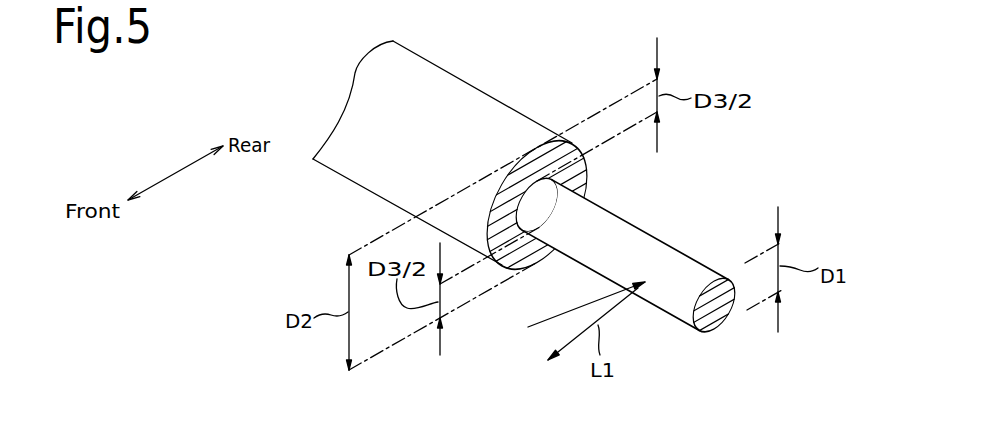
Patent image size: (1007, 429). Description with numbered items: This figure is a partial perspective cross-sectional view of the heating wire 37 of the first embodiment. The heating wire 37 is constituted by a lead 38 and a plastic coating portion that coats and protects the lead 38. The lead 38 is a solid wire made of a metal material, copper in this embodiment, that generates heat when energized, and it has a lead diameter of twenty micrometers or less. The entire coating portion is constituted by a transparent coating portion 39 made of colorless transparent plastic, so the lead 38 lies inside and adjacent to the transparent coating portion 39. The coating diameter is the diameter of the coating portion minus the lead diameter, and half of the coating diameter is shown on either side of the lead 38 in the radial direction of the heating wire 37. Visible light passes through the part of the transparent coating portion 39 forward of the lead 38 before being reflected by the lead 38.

The heating wire 37 is at (548, 235).
The lead 38 is at (612, 183).
The transparent coating portion 39 is at (582, 198).